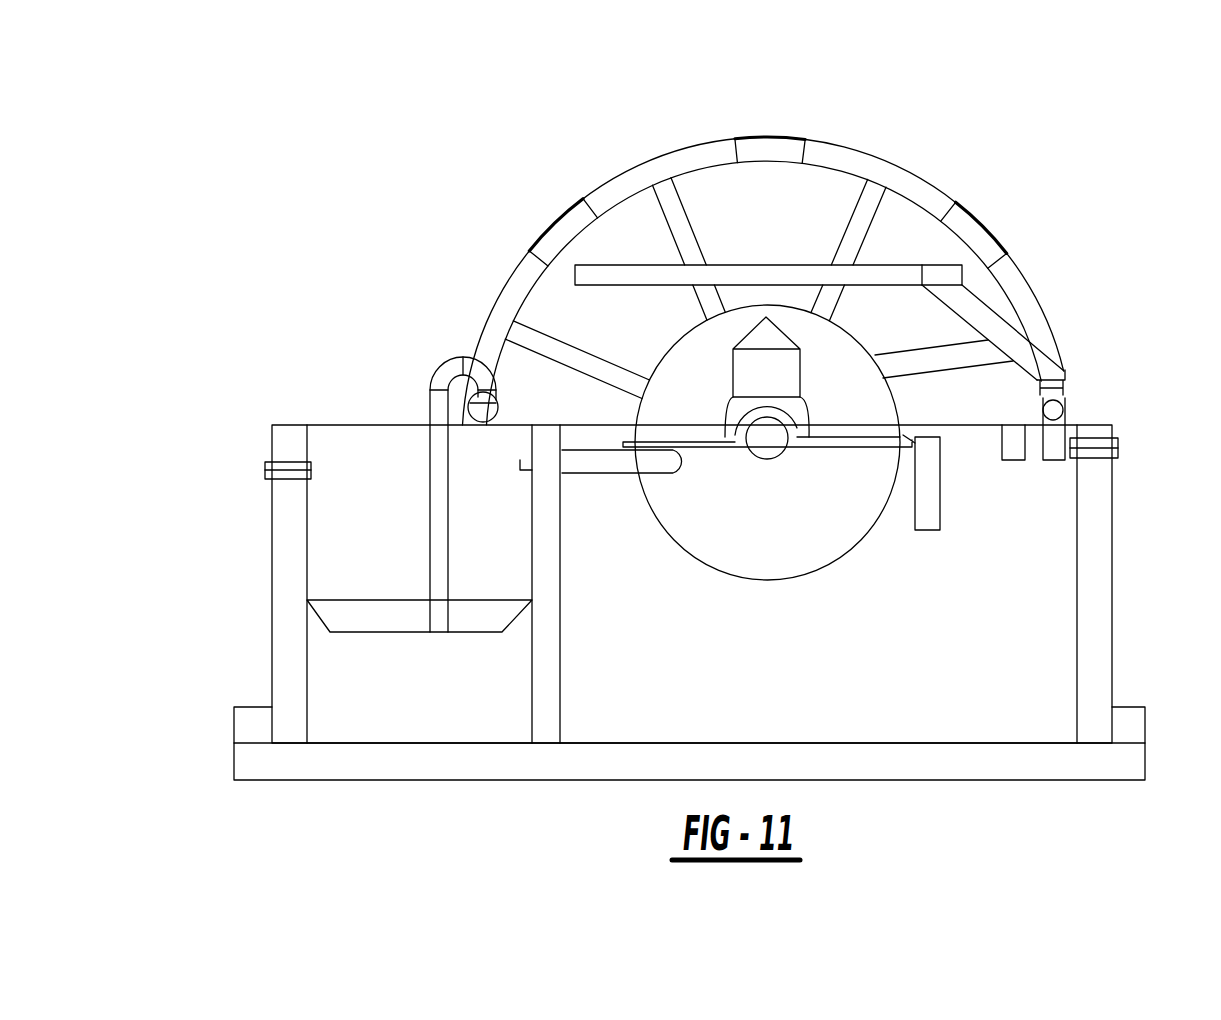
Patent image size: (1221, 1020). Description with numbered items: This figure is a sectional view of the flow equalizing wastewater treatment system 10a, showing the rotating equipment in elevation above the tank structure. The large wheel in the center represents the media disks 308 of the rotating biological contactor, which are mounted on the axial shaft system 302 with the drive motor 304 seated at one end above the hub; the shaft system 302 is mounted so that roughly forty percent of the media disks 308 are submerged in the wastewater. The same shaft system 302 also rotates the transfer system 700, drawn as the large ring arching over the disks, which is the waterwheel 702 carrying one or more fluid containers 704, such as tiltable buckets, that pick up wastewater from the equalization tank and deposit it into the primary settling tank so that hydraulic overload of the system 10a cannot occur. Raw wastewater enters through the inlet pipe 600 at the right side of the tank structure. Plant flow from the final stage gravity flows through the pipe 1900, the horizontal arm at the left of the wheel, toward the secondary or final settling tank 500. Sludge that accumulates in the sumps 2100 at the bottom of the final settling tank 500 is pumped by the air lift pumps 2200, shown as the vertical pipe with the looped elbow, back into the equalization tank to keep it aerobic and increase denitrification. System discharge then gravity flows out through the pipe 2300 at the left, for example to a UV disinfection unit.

The flow equalizing wastewater treatment system 10a is at (343, 262).
The axial shaft system 302 is at (770, 440).
The drive motor 304 is at (755, 373).
The media disks 308 is at (847, 373).
The secondary or final settling tank 500 is at (335, 500).
The inlet pipe 600 is at (1120, 448).
The transfer system 700 is at (798, 262).
The waterwheel 702 is at (878, 172).
The fluid containers 704 is at (764, 140).
The pipe 1900 is at (603, 463).
The sumps 2100 is at (357, 609).
The air lift pumps 2200 is at (435, 578).
The pipe 2300 is at (262, 470).